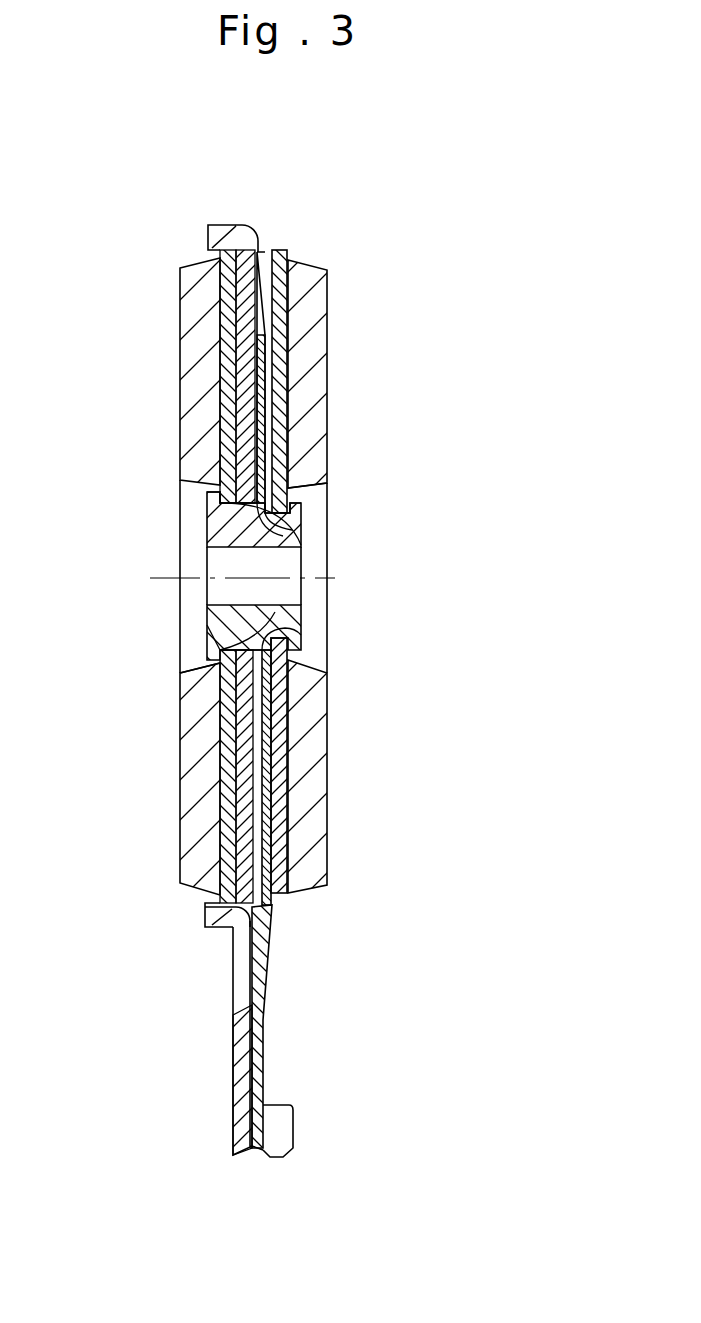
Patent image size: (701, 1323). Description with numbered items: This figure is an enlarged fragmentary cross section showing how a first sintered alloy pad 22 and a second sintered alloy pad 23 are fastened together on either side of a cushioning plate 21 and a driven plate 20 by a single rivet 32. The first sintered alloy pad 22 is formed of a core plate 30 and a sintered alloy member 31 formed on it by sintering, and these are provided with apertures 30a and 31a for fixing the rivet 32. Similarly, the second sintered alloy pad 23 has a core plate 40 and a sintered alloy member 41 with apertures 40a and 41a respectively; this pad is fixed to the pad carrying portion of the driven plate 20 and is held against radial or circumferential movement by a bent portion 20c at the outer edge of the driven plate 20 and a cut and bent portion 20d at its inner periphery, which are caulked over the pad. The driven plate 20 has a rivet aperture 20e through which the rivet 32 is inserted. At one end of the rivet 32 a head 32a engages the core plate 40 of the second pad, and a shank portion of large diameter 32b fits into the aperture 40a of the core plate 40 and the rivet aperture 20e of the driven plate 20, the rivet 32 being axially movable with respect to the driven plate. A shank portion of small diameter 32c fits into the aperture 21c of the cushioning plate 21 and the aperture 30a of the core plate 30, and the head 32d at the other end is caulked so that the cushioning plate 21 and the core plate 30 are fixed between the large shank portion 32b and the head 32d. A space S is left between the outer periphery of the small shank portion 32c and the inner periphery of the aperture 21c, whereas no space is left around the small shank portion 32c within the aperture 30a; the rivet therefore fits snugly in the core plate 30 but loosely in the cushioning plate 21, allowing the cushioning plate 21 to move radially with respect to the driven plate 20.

The driven plate 20 is at (229, 549).
The bent portion 20c is at (210, 238).
The bent portion 20d is at (205, 914).
The rivet aperture 20e is at (227, 520).
The cushioning plate 21 is at (333, 704).
The aperture 21c is at (300, 544).
The first sintered alloy pad 22 is at (388, 466).
The second sintered alloy pad 23 is at (168, 322).
The core plate 30 is at (346, 366).
The aperture 30a is at (297, 528).
The sintered alloy member 31 is at (318, 298).
The aperture 31a is at (315, 483).
The rivet 32 is at (278, 665).
The head 32a is at (203, 498).
The shank portion of a large diameter 32b is at (290, 688).
The shank portion of a small diameter 32c is at (287, 668).
The head 32d is at (295, 643).
The core plate 40 is at (228, 737).
The aperture 40a is at (210, 652).
The sintered alloy member 41 is at (135, 779).
The aperture 41a is at (210, 663).
The space S is at (215, 628).